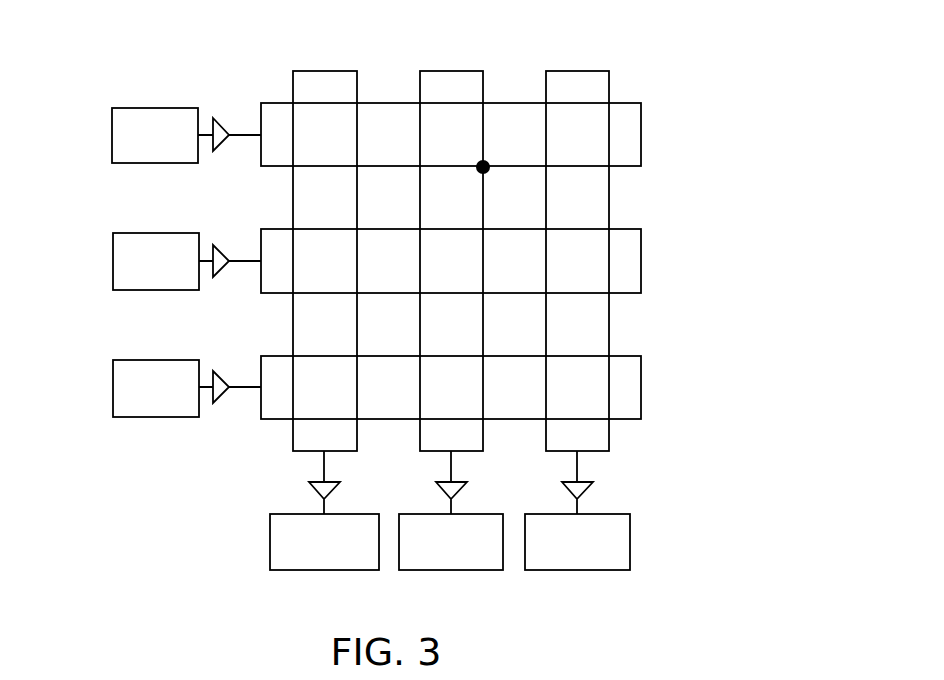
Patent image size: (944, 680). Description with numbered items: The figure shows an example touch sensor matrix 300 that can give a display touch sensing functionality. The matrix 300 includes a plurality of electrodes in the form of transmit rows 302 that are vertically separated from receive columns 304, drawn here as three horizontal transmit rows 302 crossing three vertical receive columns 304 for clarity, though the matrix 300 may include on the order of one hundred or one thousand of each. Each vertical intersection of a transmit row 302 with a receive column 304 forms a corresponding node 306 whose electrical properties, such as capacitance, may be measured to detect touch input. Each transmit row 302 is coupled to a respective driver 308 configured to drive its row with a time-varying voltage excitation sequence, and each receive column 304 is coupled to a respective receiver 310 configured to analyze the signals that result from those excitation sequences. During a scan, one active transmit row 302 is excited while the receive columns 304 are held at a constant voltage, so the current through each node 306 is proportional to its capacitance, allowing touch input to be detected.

The touch sensor matrix 300 is at (70, 271).
The transmit row 302 is at (665, 137).
The receive column 304 is at (322, 50).
The node 306 is at (486, 173).
The driver 308 is at (186, 262).
The receiver 310 is at (450, 510).